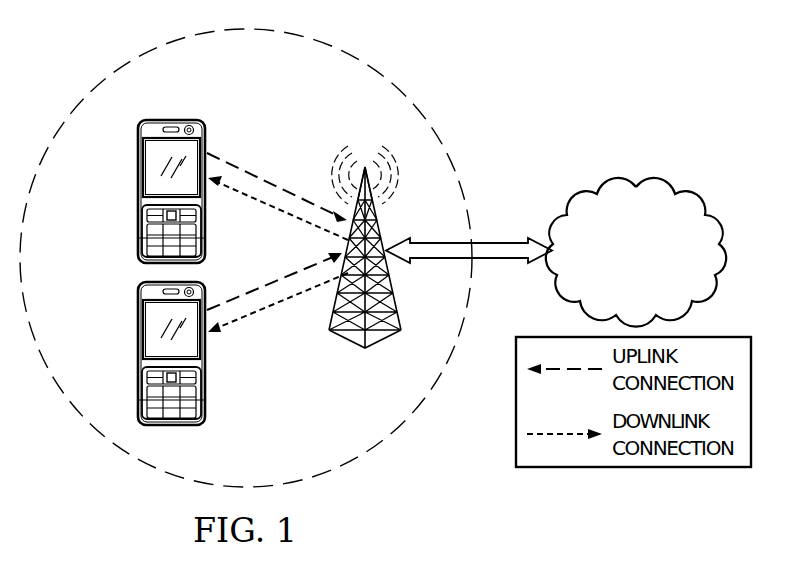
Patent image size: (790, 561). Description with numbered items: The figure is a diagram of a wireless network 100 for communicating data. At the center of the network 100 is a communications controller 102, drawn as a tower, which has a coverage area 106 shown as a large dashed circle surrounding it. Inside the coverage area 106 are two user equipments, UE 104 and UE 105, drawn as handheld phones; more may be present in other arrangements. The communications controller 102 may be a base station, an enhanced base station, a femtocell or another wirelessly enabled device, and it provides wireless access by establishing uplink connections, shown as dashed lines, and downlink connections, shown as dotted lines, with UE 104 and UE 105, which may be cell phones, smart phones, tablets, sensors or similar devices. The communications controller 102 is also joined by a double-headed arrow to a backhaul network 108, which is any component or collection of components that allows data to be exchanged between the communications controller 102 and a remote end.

The network 100 is at (515, 113).
The communications controller 102 is at (382, 340).
The UE 104 is at (138, 352).
The UE 105 is at (138, 192).
The coverage area 106 is at (142, 61).
The backhaul network 108 is at (642, 186).